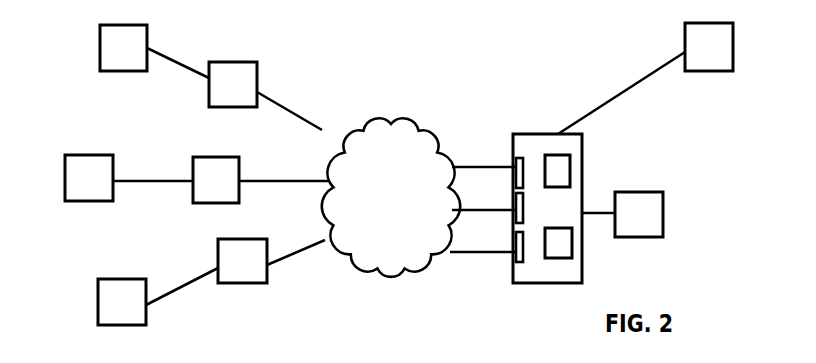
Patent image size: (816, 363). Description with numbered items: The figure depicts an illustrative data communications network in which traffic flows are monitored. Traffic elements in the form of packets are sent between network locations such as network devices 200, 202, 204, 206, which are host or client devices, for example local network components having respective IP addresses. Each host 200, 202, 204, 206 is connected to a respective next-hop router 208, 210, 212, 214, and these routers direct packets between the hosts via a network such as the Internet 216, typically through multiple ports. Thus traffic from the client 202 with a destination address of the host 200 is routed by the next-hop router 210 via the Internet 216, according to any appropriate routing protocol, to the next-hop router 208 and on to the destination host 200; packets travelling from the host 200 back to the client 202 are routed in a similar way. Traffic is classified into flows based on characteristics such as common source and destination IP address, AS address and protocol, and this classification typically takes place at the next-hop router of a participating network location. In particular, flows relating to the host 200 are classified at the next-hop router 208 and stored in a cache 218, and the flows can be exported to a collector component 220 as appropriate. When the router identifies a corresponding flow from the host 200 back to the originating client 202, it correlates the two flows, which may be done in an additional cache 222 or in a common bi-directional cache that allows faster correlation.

The network device 200 is at (726, 200).
The network device 202 is at (122, 25).
The network device 204 is at (65, 187).
The network device 206 is at (98, 311).
The next-hop router 208 is at (553, 283).
The next-hop router 210 is at (240, 62).
The next-hop router 212 is at (231, 157).
The next-hop router 214 is at (240, 238).
The Internet 216 is at (422, 110).
The cache 218 is at (555, 162).
The collector component 220 is at (710, 23).
The additional cache 222 is at (553, 243).